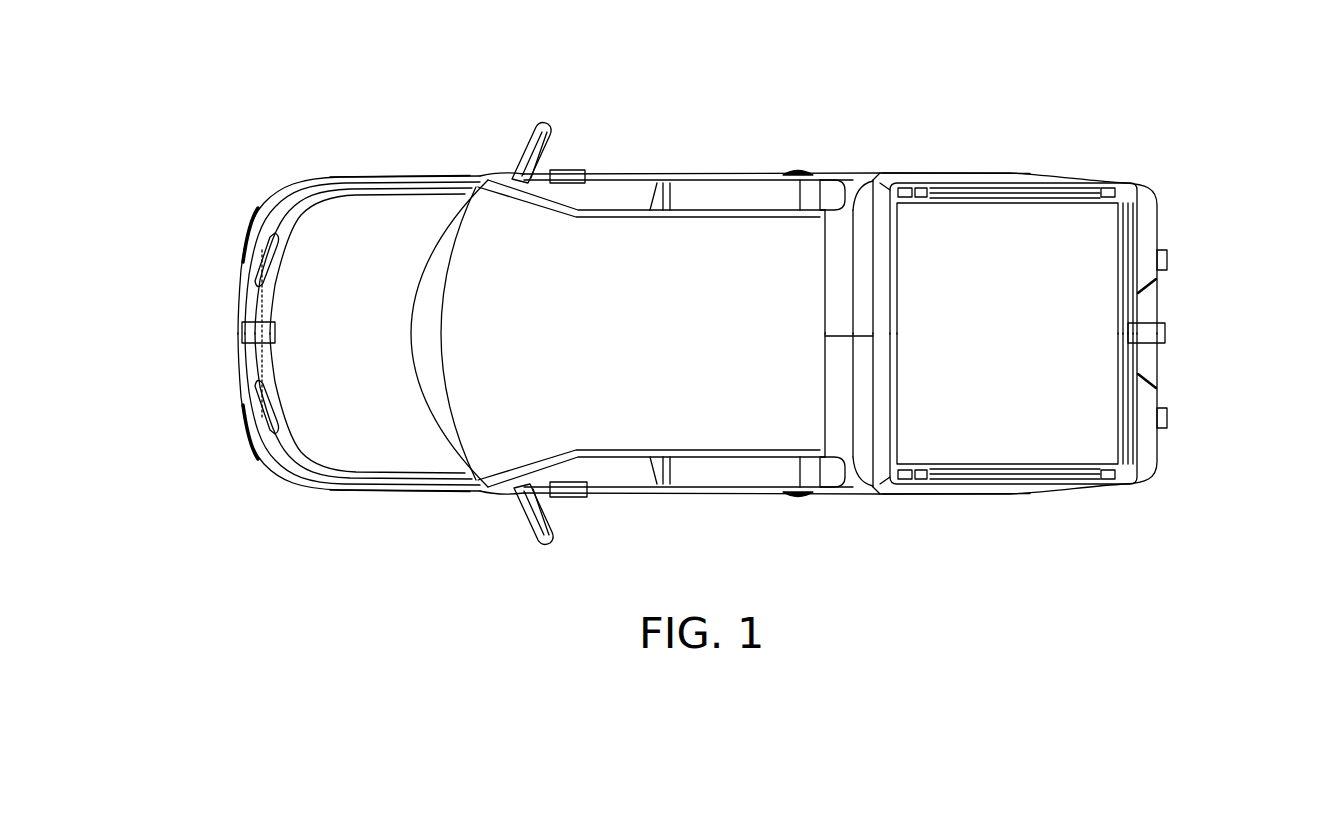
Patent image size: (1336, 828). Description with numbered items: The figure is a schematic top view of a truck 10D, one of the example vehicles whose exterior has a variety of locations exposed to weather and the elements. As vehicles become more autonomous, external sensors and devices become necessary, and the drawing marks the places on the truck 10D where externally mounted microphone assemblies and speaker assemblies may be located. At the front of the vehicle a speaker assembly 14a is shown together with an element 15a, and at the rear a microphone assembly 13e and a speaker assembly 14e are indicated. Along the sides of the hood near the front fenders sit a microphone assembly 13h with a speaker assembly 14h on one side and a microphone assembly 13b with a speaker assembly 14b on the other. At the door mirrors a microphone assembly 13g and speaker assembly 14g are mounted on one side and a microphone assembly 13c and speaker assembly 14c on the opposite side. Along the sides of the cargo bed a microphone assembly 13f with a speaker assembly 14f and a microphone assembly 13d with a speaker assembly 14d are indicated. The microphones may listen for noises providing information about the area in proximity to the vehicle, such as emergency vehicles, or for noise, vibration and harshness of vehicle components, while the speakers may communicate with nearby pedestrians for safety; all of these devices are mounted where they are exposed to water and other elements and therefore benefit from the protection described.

The truck 10D is at (208, 138).
The microphone assembly 13h is at (394, 135).
The speaker assembly 14h is at (473, 163).
The microphone assembly 13b is at (394, 533).
The speaker assembly 14b is at (473, 505).
The microphone assembly 13f is at (956, 133).
The speaker assembly 14f is at (1035, 163).
The microphone assembly 13d is at (955, 532).
The speaker assembly 14d is at (1035, 503).
The microphone assembly 13g is at (638, 150).
The speaker assembly 14g is at (567, 171).
The microphone assembly 13c is at (636, 514).
The speaker assembly 14c is at (573, 497).
The microphone assembly 13e is at (1220, 338).
The speaker assembly 14e is at (1165, 332).
The speaker assembly 14a is at (182, 326).
The front sensor unit 15a is at (238, 333).